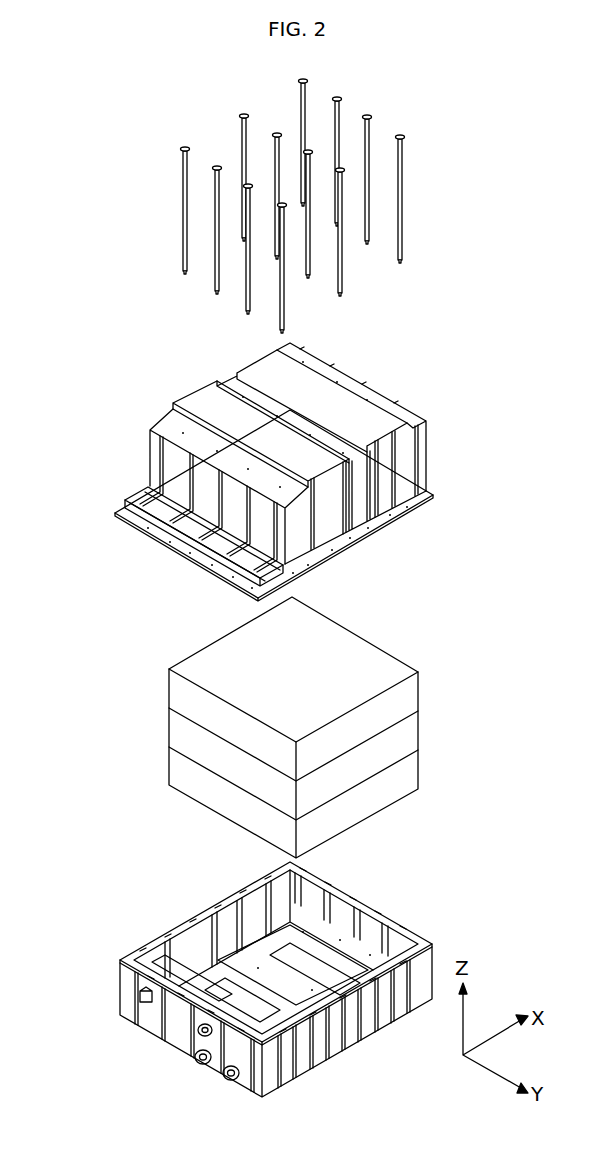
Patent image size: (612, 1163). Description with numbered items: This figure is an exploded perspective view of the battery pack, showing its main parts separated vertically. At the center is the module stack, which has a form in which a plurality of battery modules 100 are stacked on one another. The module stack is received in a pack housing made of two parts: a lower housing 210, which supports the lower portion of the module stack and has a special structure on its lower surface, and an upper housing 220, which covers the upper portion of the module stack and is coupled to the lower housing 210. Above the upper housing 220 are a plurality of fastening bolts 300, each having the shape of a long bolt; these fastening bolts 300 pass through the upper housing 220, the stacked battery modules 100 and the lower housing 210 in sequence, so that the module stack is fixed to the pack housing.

The battery module 100 is at (410, 698).
The lower housing 210 is at (268, 1068).
The upper housing 220 is at (401, 418).
The fastening bolt 300 is at (184, 148).